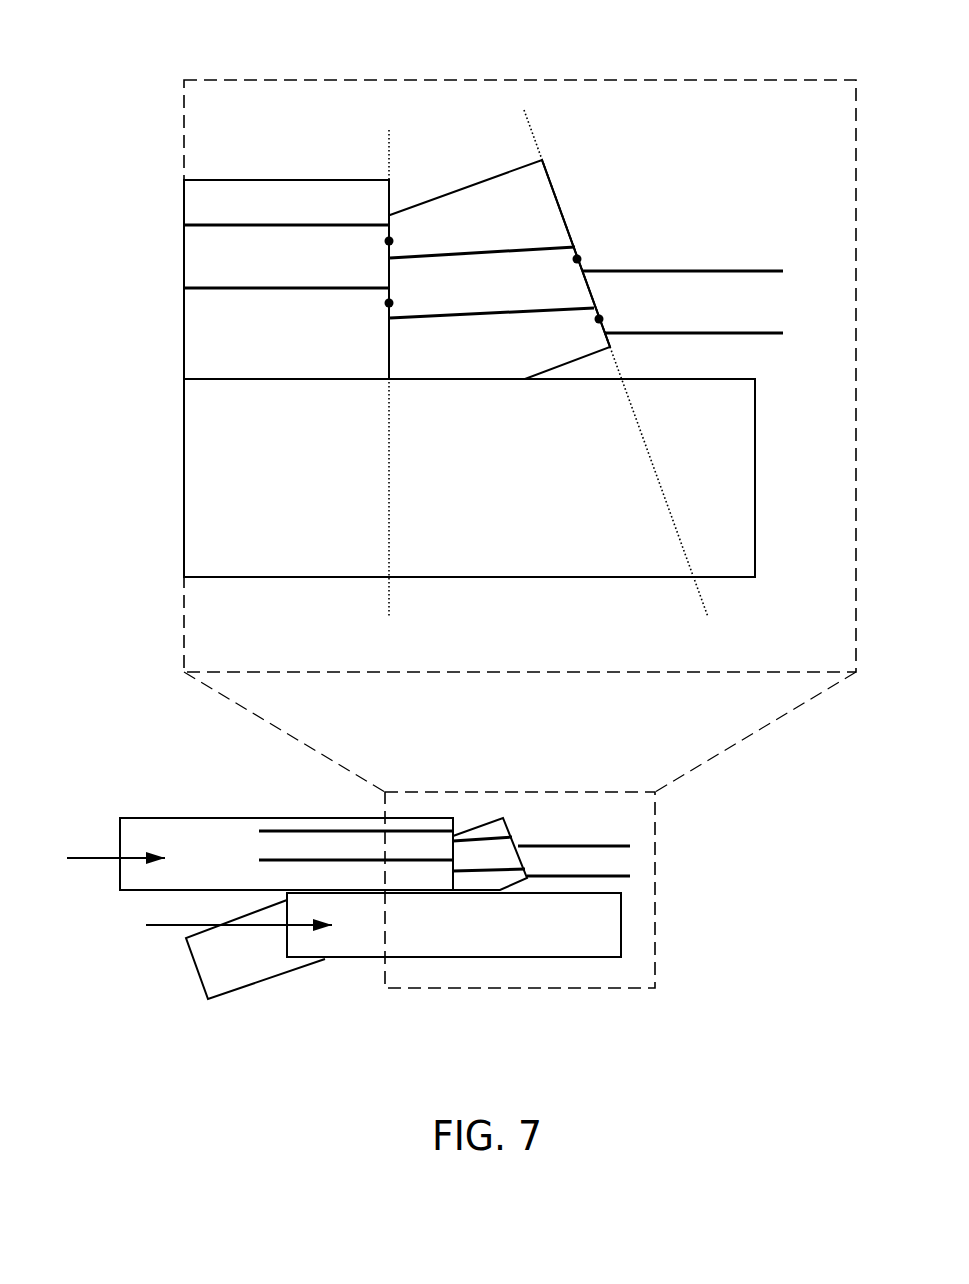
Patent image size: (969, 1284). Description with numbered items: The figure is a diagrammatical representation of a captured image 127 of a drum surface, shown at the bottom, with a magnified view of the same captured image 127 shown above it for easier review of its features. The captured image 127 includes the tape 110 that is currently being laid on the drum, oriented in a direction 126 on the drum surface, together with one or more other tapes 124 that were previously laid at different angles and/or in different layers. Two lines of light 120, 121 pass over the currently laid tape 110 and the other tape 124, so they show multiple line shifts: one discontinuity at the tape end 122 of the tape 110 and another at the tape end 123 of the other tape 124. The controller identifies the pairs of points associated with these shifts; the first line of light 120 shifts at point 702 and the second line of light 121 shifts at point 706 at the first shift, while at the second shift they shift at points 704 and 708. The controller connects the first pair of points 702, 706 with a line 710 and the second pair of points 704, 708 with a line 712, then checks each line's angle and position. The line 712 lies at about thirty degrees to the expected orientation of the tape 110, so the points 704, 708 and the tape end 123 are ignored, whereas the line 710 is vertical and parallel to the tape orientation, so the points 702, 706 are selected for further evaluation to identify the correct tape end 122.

The tape 110 is at (188, 193).
The first line of light 120 is at (255, 224).
The second line of light 121 is at (215, 288).
The tape end 122 is at (392, 193).
The tape end of the other tape 123 is at (550, 173).
The other tape 124 is at (553, 343).
The direction 126 is at (83, 856).
The captured image 127 is at (256, 80).
The point 702 is at (384, 241).
The point 704 is at (582, 259).
The point 706 is at (385, 303).
The point 708 is at (604, 319).
The line 710 is at (388, 138).
The line 712 is at (523, 120).